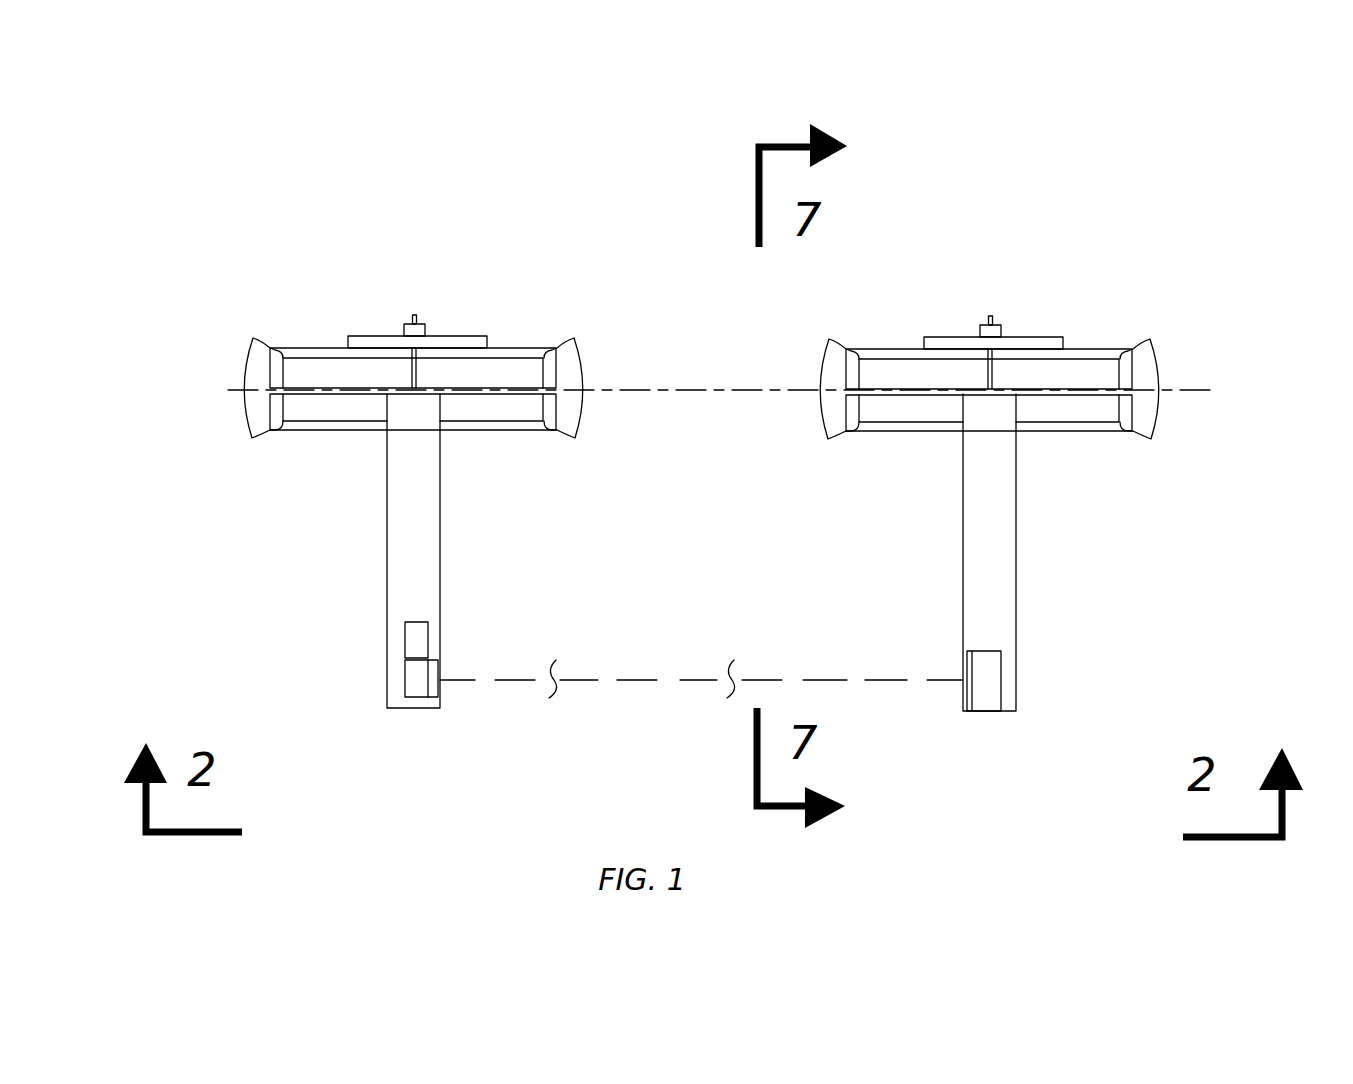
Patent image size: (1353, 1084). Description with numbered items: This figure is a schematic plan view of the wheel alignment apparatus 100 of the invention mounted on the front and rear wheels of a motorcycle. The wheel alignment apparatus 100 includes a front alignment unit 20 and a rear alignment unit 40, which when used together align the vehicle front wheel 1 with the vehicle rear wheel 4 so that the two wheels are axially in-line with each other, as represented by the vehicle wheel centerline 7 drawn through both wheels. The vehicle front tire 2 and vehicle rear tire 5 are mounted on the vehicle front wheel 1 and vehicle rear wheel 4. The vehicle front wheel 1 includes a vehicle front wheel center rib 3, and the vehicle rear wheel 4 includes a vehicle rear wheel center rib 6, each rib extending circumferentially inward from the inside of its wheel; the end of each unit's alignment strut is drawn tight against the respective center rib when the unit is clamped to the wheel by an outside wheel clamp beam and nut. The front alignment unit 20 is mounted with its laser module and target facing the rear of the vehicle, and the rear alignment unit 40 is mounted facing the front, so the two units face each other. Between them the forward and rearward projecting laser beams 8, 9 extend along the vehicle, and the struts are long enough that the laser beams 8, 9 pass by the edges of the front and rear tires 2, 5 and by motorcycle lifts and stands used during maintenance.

The wheel alignment apparatus 100 is at (266, 124).
The vehicle front wheel 1 is at (1065, 424).
The vehicle front tire 2 is at (1165, 424).
The vehicle front wheel center rib 3 is at (1118, 384).
The vehicle rear wheel 4 is at (320, 422).
The vehicle rear tire 5 is at (242, 370).
The vehicle rear wheel center rib 6 is at (540, 382).
The vehicle wheel centerline 7 is at (724, 392).
The forward projecting laser beam 8 is at (535, 681).
The rearward projecting laser beam 9 is at (680, 681).
The front alignment unit 20 is at (1040, 612).
The rear alignment unit 40 is at (350, 606).